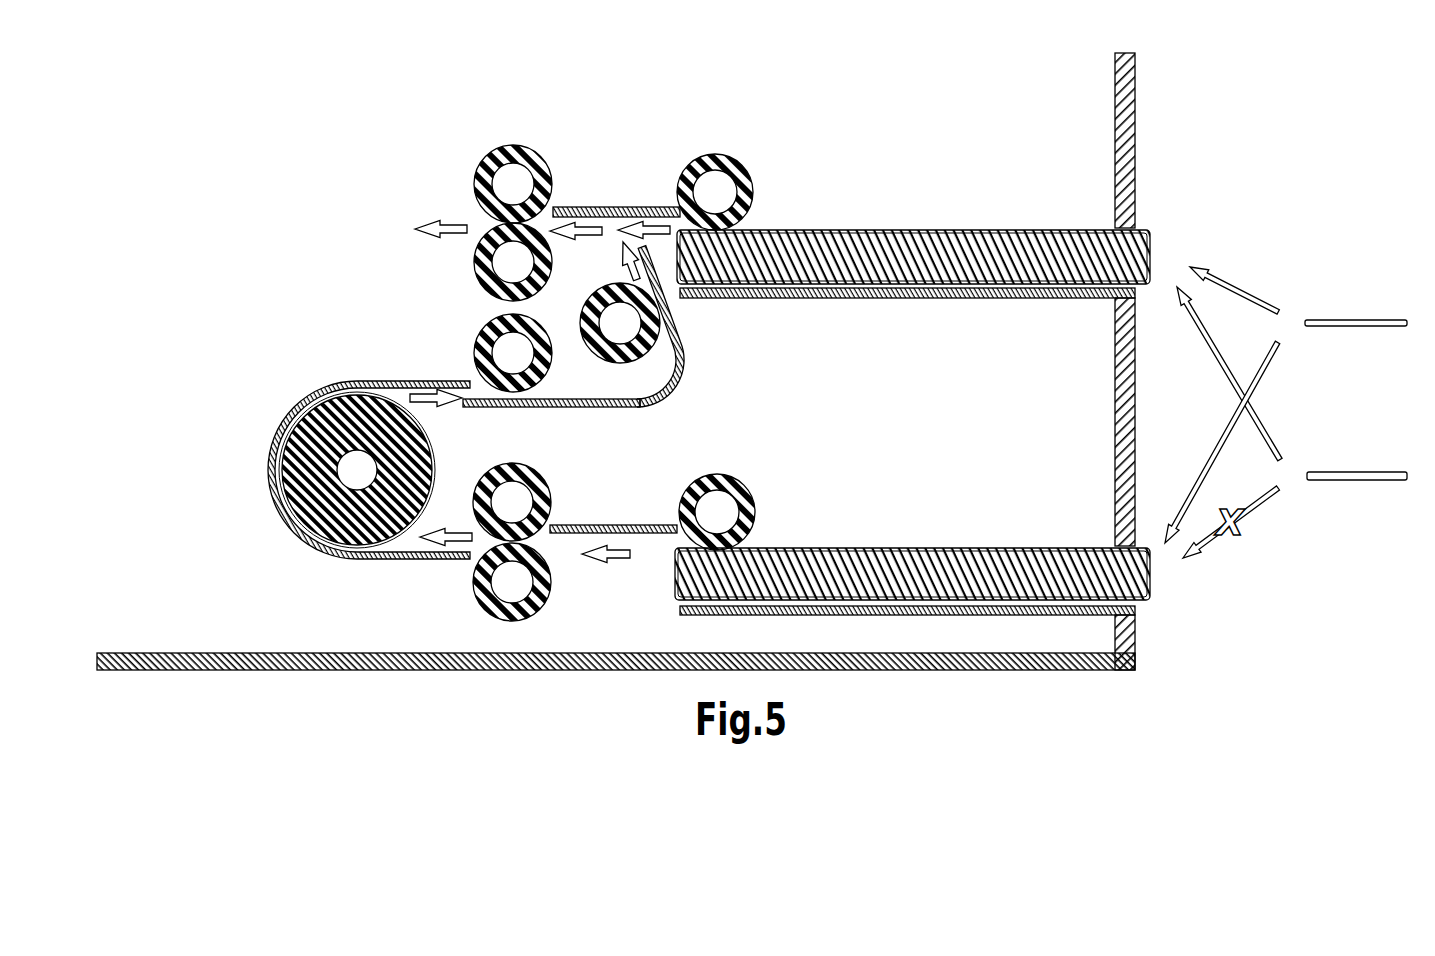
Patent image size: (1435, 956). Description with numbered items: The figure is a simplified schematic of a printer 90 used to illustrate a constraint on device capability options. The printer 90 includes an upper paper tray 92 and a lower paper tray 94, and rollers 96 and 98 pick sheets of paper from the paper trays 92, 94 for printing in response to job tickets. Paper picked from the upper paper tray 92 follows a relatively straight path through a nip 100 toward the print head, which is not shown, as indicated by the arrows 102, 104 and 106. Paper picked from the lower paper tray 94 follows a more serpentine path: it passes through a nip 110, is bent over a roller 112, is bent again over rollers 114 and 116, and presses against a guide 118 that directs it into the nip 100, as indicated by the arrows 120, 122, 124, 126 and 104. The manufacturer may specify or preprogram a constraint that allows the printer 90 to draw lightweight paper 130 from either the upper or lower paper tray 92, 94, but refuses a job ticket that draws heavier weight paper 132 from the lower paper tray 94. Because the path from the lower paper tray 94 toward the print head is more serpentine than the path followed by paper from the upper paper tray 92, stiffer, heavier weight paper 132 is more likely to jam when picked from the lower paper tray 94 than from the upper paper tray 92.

The printer 90 is at (1190, 143).
The upper paper tray 92 is at (990, 228).
The lower paper tray 94 is at (1043, 545).
The roller 96 is at (757, 182).
The roller 98 is at (750, 497).
The nip 100 is at (477, 213).
The arrow 102 is at (657, 227).
The arrow 104 is at (582, 240).
The arrow 106 is at (448, 227).
The nip 110 is at (540, 540).
The roller 112 is at (287, 457).
The roller 114 is at (558, 412).
The roller 116 is at (628, 363).
The guide 118 is at (585, 205).
The arrow 120 is at (613, 547).
The arrow 122 is at (452, 548).
The arrow 124 is at (425, 397).
The arrow 126 is at (645, 272).
The lightweight paper 130 is at (1382, 320).
The heavier weight paper 132 is at (1392, 480).